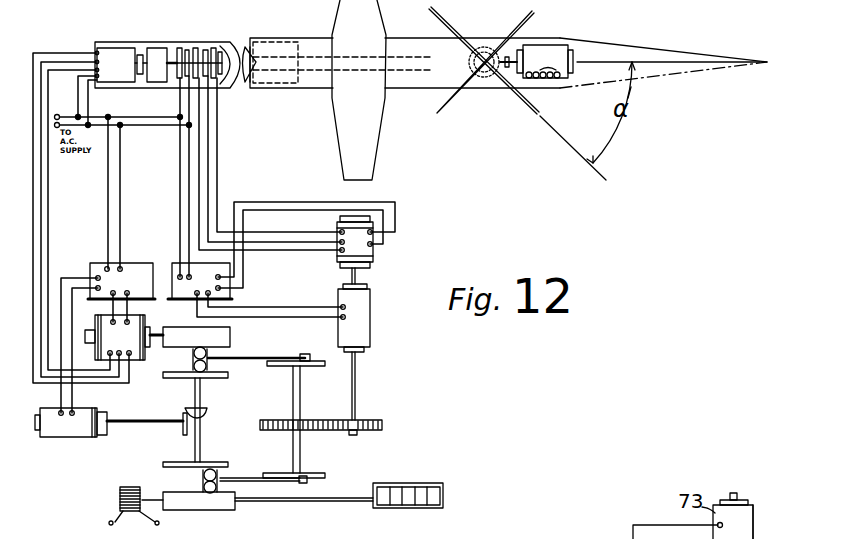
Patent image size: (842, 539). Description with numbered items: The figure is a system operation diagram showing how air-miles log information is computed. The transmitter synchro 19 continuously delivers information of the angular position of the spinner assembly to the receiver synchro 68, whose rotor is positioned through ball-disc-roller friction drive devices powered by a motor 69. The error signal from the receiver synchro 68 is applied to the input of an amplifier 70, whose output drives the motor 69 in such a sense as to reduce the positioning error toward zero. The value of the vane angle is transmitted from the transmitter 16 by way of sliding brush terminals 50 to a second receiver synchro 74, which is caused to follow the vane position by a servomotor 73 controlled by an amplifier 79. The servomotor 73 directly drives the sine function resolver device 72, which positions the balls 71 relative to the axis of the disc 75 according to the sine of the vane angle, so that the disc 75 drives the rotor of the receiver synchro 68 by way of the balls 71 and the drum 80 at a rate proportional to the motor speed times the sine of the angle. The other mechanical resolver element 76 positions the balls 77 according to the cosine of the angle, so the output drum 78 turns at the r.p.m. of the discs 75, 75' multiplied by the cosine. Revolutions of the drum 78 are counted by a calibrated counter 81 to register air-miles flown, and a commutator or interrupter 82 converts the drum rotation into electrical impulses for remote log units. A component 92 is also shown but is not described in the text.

The transmitter 16 is at (548, 46).
The transmitter synchro 19 is at (118, 47).
The sliding brush terminals 50 is at (220, 89).
The receiver synchro 68 is at (133, 361).
The motor 69 is at (78, 438).
The amplifier 70 is at (100, 262).
The balls 71 is at (190, 357).
The sine function resolver device 72 is at (305, 356).
The servomotor 73 is at (368, 328).
The receiver synchro 74 is at (375, 252).
The disc 75 is at (207, 417).
The disc 75' is at (205, 451).
The mechanical resolver element 76 is at (310, 481).
The balls 77 is at (200, 477).
The drum 78 is at (235, 506).
The amplifier 79 is at (174, 264).
The drum 80 is at (230, 330).
The counter 81 is at (448, 494).
The commutator or interrupter 82 is at (113, 498).
The component 92 is at (772, 522).